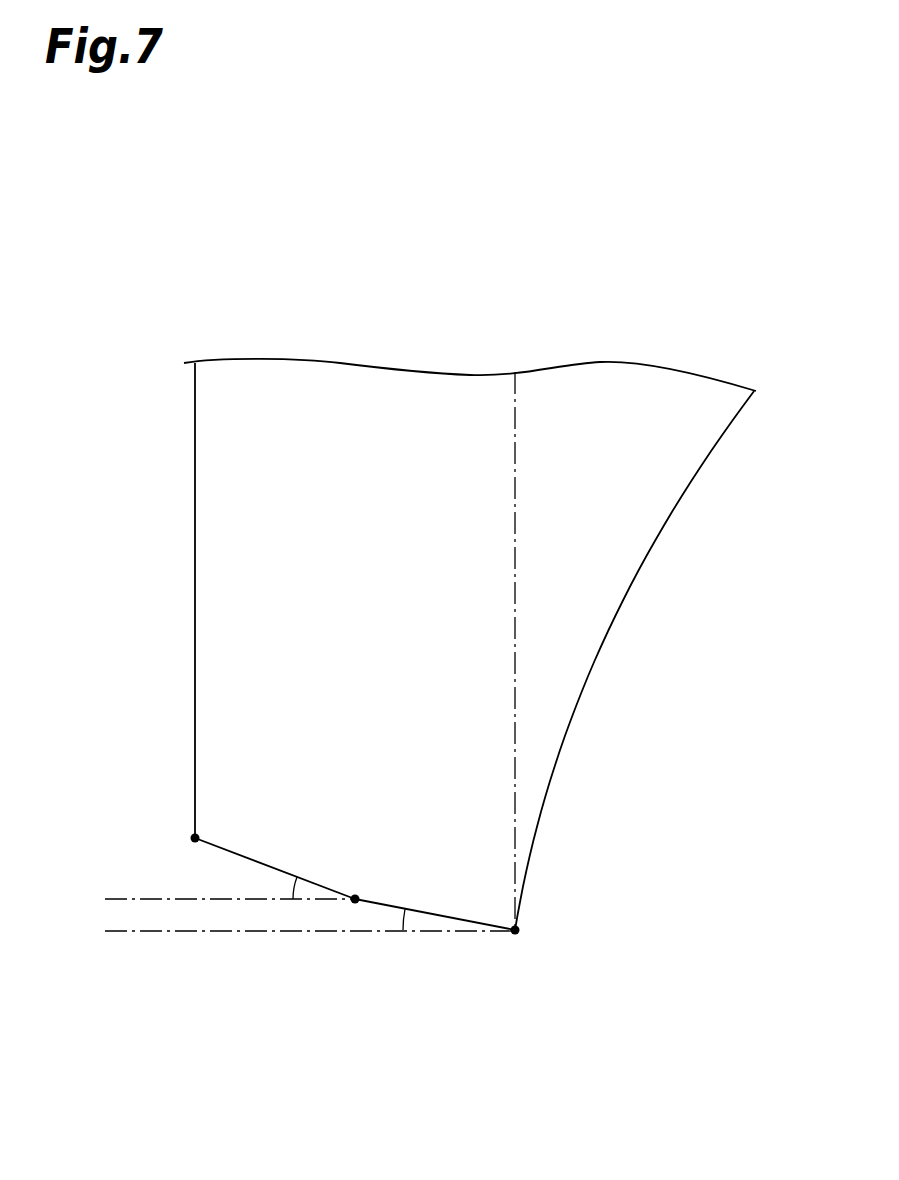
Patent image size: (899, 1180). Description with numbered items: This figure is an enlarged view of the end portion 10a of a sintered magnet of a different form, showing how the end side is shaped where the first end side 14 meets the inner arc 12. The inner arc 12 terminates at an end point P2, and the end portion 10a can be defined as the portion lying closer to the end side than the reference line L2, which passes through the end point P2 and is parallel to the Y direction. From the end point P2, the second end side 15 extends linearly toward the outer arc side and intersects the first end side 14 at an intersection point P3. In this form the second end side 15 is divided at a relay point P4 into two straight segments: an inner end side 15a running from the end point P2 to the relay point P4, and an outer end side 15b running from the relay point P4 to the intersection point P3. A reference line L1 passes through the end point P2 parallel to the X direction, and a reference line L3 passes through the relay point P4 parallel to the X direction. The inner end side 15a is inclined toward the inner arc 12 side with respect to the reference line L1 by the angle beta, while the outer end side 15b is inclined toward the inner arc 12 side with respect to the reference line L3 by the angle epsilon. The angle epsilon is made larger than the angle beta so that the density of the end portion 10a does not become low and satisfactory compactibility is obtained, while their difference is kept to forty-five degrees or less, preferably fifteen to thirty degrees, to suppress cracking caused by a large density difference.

The end portion 10a is at (460, 684).
The inner arc 12 is at (603, 641).
The first end side 14 is at (195, 548).
The second end side 15 is at (355, 840).
The inner end side 15a is at (435, 861).
The outer end side 15b is at (251, 864).
The reference line L1 is at (132, 932).
The reference line L2 is at (515, 470).
The reference line L3 is at (129, 899).
The end point P2 is at (512, 949).
The intersection point P3 is at (175, 841).
The relay point P4 is at (340, 913).